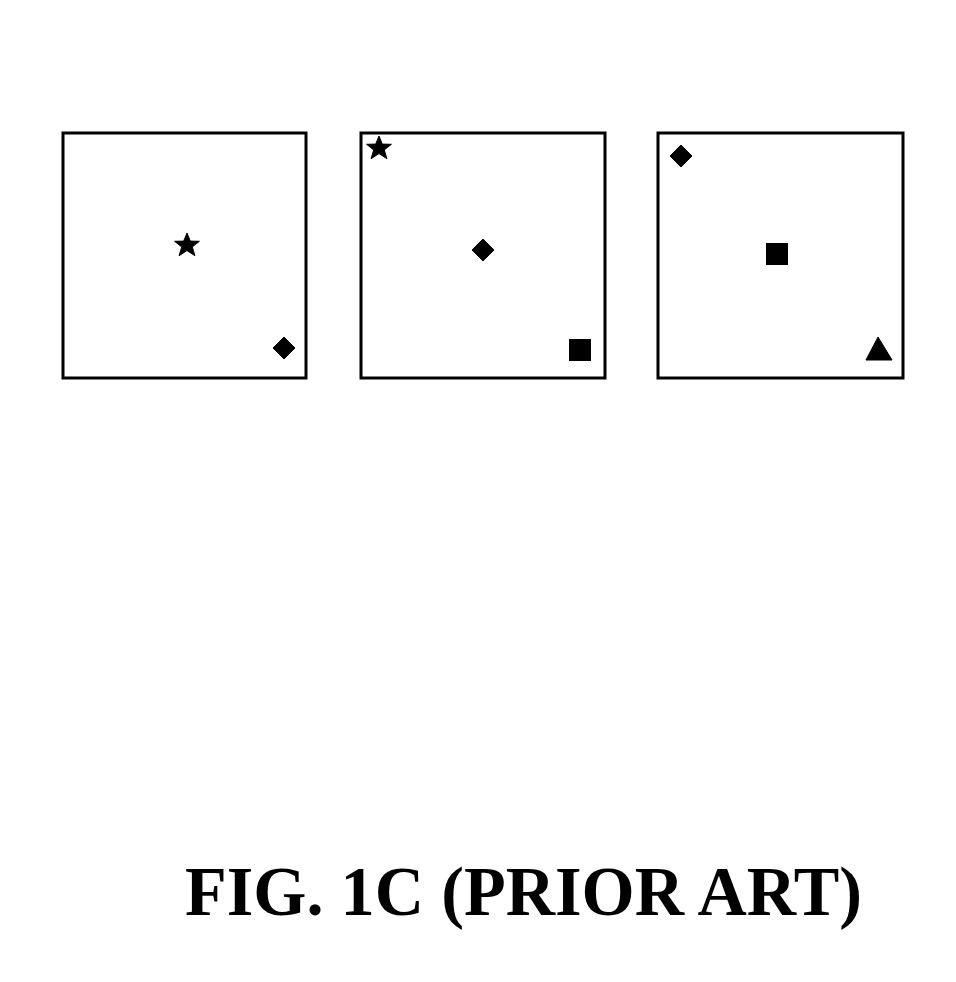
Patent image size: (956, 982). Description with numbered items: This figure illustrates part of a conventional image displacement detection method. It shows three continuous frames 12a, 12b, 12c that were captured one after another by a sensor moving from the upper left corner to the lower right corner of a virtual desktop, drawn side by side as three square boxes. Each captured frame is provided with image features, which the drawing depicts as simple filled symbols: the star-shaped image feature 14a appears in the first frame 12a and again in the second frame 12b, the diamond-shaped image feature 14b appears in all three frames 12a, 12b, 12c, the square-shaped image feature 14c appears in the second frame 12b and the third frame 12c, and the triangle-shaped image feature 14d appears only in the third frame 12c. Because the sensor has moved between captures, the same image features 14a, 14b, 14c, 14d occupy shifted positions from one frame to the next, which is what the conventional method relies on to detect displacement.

The captured frame 12a is at (186, 133).
The captured frame 12b is at (489, 133).
The captured frame 12c is at (787, 133).
The image feature 14a is at (377, 153).
The image feature 14b is at (674, 164).
The image feature 14c is at (767, 264).
The image feature 14d is at (872, 359).